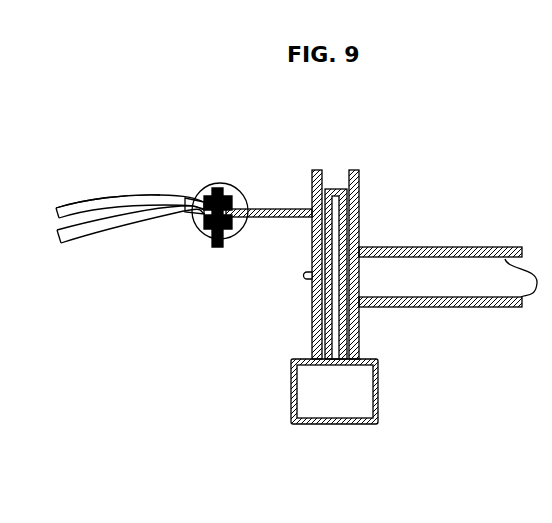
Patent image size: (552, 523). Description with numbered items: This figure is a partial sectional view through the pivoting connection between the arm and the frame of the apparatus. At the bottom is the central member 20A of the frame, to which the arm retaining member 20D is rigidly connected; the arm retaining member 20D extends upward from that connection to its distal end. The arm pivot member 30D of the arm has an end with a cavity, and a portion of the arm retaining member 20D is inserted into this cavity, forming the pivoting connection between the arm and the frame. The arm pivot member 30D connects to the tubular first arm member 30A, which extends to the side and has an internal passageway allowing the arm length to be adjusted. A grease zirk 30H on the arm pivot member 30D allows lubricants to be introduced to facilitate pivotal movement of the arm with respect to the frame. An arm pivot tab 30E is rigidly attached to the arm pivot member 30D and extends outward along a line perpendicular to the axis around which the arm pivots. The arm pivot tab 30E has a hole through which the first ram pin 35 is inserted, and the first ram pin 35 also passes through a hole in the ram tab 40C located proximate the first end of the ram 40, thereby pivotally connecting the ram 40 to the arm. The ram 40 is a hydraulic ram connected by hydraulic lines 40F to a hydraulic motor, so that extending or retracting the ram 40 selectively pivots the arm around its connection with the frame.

The ram 40 is at (193, 226).
The hydraulic lines 40F is at (120, 194).
The ram tab 40C is at (193, 200).
The first ram pin 35 is at (218, 188).
The arm pivot tab 30E is at (278, 209).
The arm pivot member 30D is at (360, 207).
The arm retaining member 20D is at (334, 188).
The grease zirk 30H is at (307, 275).
The first arm member 30A is at (427, 307).
The central member 20A is at (378, 387).